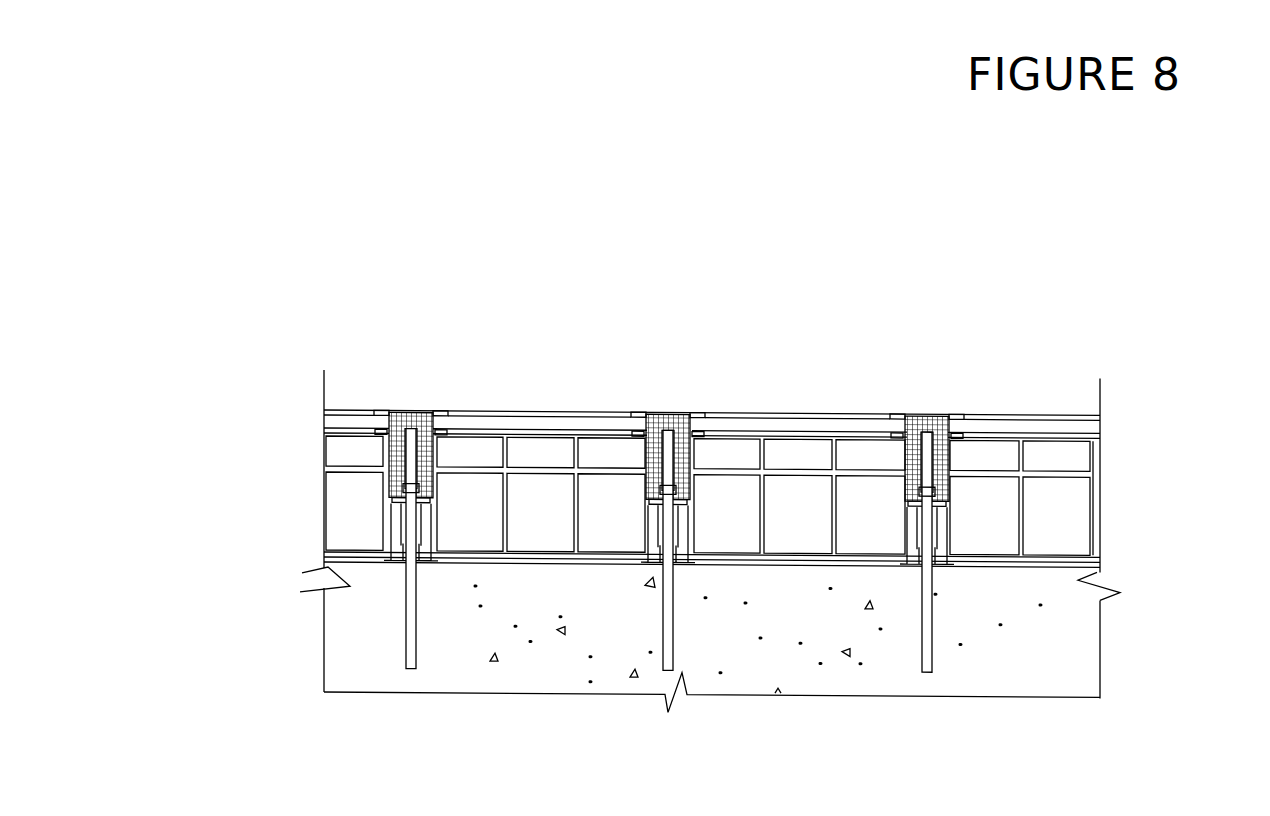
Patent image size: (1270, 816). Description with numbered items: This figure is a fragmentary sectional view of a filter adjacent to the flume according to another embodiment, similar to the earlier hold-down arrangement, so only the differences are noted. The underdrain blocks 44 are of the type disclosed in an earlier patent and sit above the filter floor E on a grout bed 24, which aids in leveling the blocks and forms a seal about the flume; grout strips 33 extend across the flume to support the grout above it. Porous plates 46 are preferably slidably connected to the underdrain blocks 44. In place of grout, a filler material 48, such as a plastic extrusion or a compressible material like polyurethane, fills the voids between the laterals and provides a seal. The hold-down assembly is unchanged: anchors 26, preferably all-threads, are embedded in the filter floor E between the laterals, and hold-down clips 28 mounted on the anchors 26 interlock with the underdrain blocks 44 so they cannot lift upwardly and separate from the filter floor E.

The grout bed 24 is at (347, 567).
The anchor 26 is at (935, 640).
The hold-down clip 28 is at (950, 492).
The grout strip 33 is at (953, 557).
The underdrain block 44 is at (535, 535).
The porous plate 46 is at (553, 412).
The filler material 48 is at (413, 412).
The filter floor E is at (373, 570).